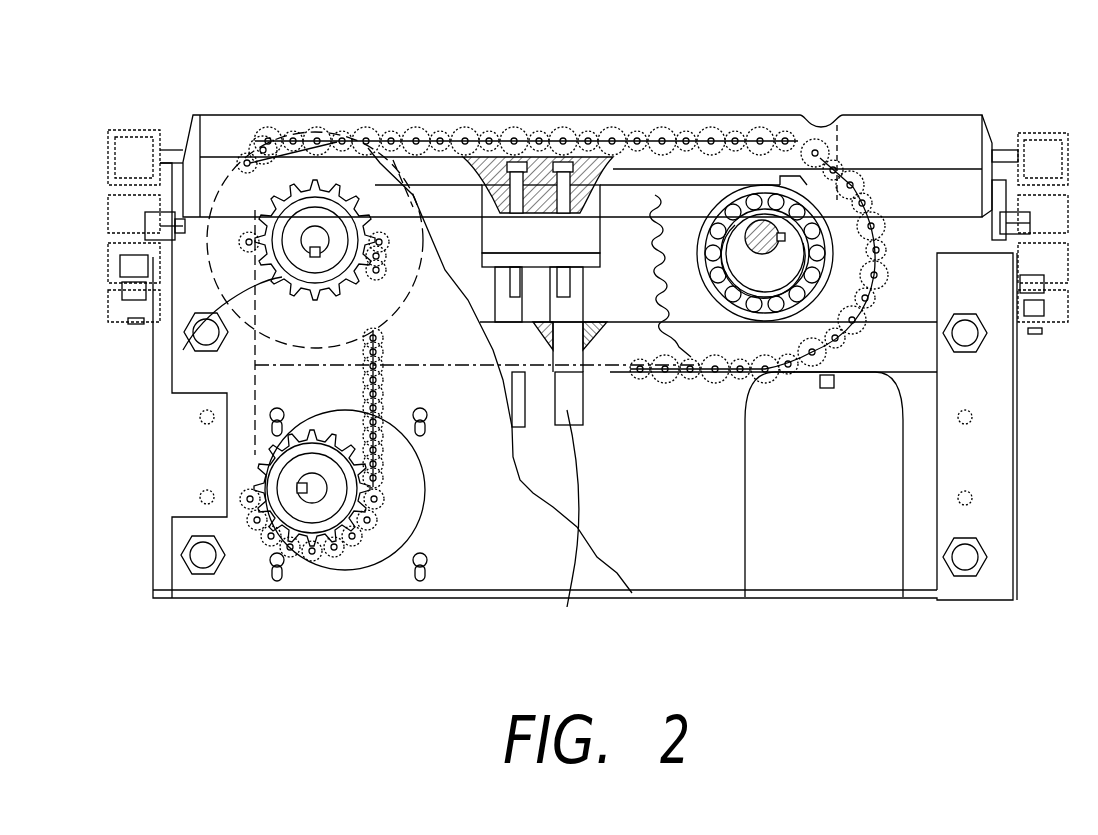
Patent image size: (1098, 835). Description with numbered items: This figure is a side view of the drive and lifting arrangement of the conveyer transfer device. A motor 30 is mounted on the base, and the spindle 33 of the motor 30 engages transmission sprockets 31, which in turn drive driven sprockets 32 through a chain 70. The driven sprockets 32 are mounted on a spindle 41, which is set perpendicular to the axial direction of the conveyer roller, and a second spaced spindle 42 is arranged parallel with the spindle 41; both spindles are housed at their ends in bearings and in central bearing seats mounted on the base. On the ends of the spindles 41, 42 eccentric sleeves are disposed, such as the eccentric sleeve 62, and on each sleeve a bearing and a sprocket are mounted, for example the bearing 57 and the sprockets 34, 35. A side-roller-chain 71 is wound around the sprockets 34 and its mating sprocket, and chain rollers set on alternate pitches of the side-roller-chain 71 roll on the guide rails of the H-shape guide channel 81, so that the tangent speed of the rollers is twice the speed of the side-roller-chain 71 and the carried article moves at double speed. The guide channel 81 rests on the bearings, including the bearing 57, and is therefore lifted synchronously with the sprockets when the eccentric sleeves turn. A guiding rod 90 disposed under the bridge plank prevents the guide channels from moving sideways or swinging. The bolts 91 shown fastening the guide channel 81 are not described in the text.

The motor 30 is at (384, 543).
The transmission sprockets 31 is at (311, 517).
The driven sprockets 32 is at (183, 350).
The spindle 33 is at (310, 492).
The sprockets 34 is at (308, 234).
The sprockets 35 is at (696, 182).
The spindle 41 is at (210, 225).
The spindle 42 is at (766, 227).
The bearing 57 is at (768, 220).
The eccentric sleeve 62 is at (792, 258).
The chain 70 is at (367, 360).
The side-roller-chain 71 is at (613, 140).
The guide channel 81 is at (437, 175).
The guiding rod 90 is at (518, 413).
The bolts 91 is at (563, 165).